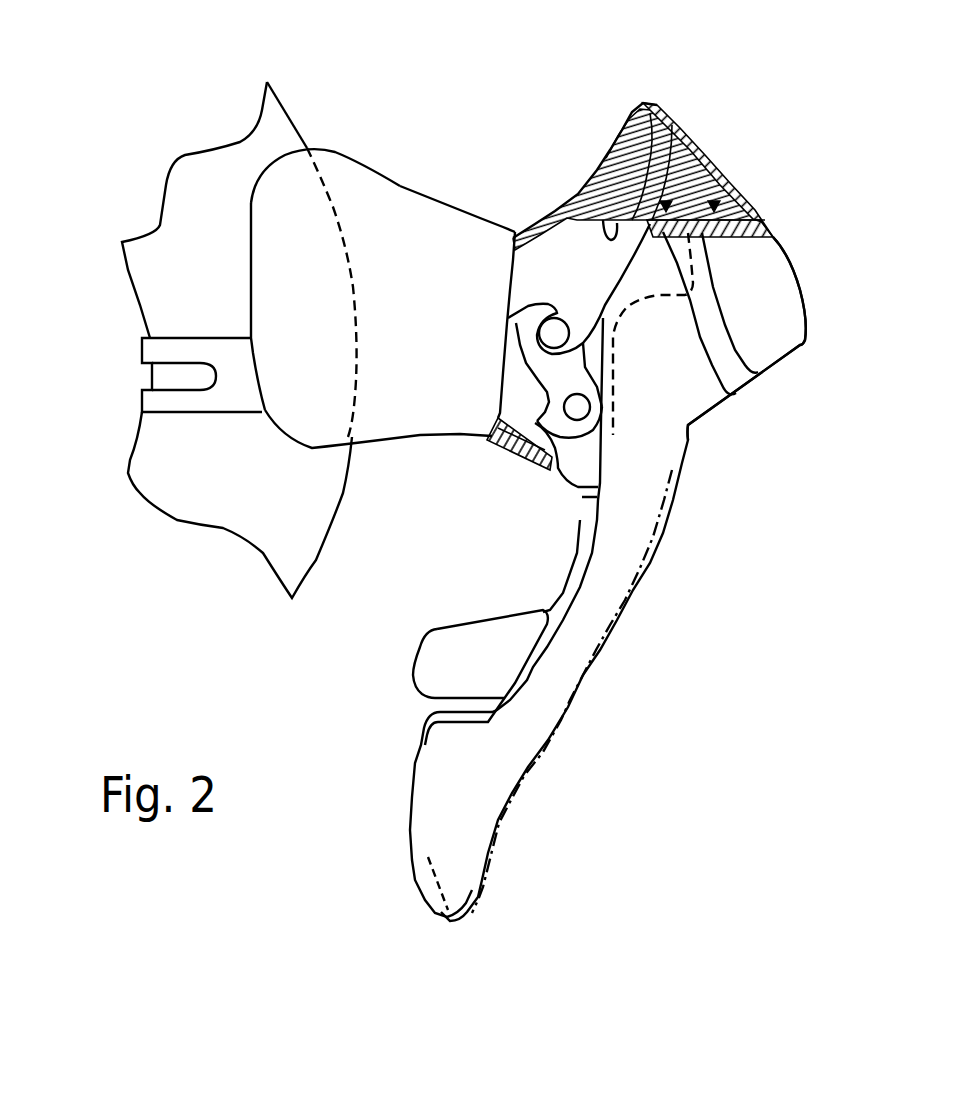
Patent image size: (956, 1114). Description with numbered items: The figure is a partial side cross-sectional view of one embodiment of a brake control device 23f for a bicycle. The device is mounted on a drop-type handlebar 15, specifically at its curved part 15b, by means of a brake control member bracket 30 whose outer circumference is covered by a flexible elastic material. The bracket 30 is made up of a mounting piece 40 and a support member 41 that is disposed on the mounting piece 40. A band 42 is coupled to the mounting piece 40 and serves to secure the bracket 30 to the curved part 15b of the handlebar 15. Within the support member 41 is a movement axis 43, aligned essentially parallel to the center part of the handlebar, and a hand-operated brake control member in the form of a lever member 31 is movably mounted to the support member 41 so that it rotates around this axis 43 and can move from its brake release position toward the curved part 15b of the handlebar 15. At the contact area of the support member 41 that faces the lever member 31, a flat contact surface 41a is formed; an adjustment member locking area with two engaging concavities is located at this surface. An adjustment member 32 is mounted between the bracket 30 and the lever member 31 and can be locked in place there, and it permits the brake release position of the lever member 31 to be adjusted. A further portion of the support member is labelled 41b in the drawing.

The drop-type handlebar 15 is at (272, 150).
The curved part 15b is at (293, 540).
The brake control device 23f is at (478, 150).
The brake control member bracket 30 is at (430, 242).
The lever member 31 is at (607, 583).
The adjustment member 32 is at (765, 218).
The mounting piece 40 is at (390, 228).
The support member 41 is at (567, 257).
The flat contact surface 41a is at (640, 205).
The bracket flange portion 41b is at (730, 190).
The band 42 is at (155, 397).
The movement axis 43 is at (577, 407).